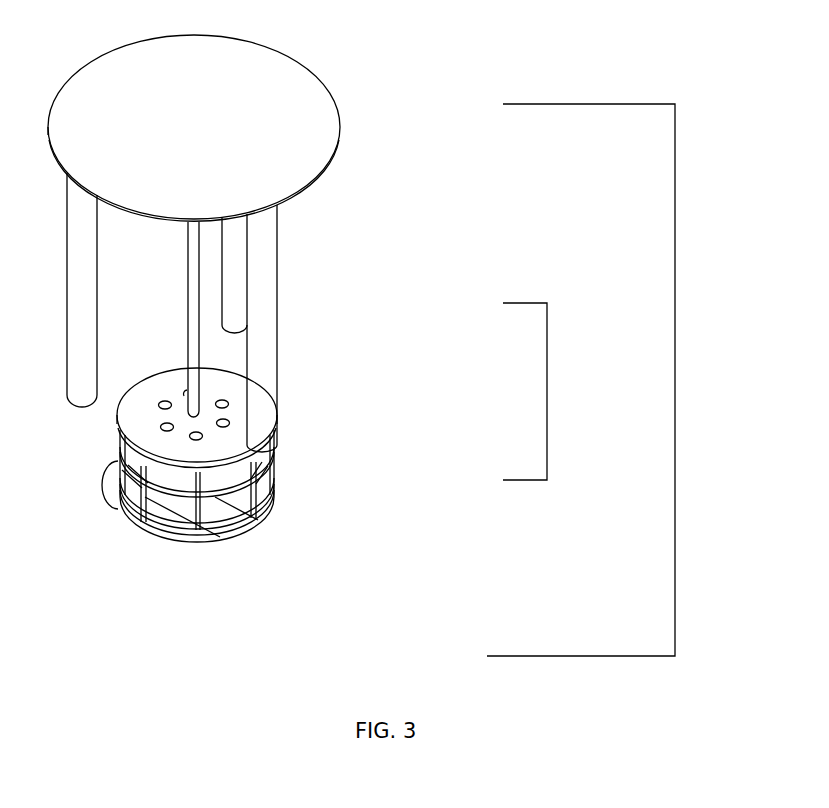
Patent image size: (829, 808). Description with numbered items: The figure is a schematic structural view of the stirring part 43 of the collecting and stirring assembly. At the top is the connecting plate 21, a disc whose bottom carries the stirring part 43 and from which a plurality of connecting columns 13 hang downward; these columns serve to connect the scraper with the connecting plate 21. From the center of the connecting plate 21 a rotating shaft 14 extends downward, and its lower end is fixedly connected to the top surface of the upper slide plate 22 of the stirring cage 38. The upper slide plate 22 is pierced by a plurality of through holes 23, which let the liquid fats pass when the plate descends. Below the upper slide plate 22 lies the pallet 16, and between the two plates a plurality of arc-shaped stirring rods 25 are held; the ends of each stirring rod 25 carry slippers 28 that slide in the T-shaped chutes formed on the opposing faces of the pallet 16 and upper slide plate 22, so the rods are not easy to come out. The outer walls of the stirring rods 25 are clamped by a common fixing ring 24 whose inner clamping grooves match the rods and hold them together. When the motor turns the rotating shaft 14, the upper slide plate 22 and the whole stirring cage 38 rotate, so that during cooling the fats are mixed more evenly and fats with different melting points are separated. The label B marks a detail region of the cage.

The connecting plate 21 is at (293, 130).
The rotating shaft 14 is at (196, 286).
The connecting columns 13 is at (268, 318).
The through holes 23 is at (227, 422).
The upper slide plate 22 is at (229, 439).
The fixing ring 24 is at (272, 461).
The stirring rods 25 is at (262, 489).
The pallet 16 is at (266, 512).
The slippers 28 is at (258, 520).
The detail region B is at (220, 537).
The stirring cage 38 is at (518, 392).
The stirring part 43 is at (646, 379).